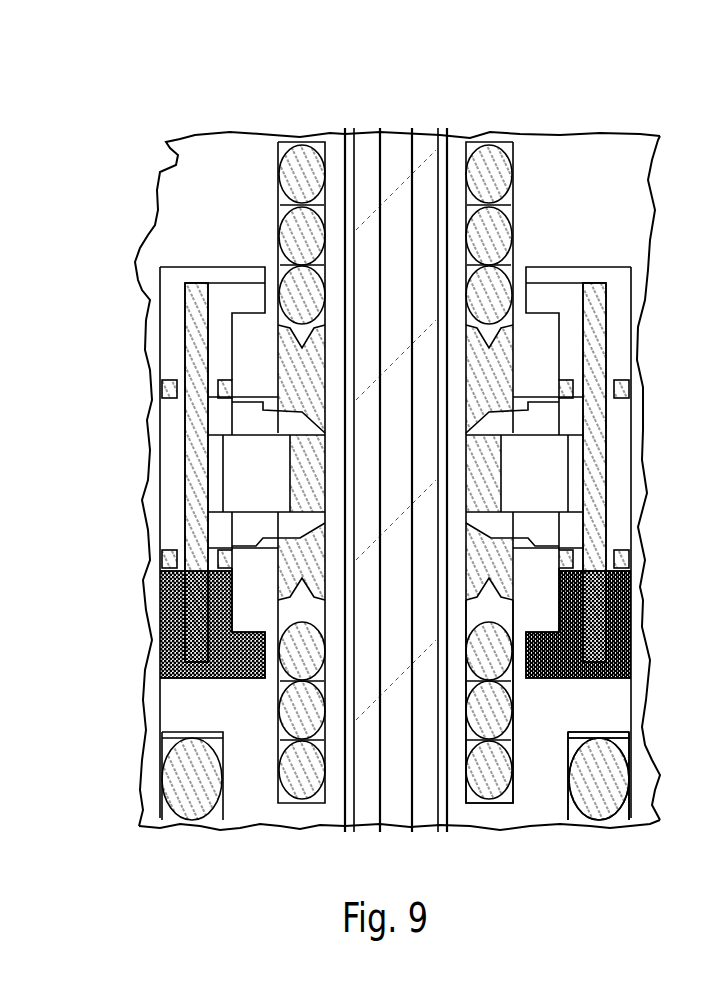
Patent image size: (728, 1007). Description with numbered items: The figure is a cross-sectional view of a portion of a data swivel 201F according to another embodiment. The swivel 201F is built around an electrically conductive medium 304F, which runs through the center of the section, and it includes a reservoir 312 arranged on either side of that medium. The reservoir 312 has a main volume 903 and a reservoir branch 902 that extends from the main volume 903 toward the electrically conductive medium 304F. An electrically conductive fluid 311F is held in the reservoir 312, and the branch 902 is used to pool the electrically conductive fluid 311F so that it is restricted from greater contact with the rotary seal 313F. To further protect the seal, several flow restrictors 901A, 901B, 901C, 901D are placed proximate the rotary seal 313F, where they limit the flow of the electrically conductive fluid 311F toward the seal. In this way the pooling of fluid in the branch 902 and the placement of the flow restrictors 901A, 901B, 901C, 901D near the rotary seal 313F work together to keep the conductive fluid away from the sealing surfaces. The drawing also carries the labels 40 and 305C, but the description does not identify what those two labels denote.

The swivel 201F is at (207, 161).
The electrically conductive medium 304F is at (478, 812).
The electrically conductive fluid 311F is at (165, 664).
The reservoir 312 is at (657, 477).
The rotary seal 313F is at (580, 572).
The stator 40 is at (433, 702).
The flow restrictor 901A is at (162, 388).
The flow restrictor 901B is at (629, 388).
The flow restrictor 901C is at (625, 553).
The flow restrictor 901D is at (159, 554).
The reservoir branch 902 is at (537, 700).
The main volume 903 is at (624, 695).
The roller bearing 305C is at (648, 776).